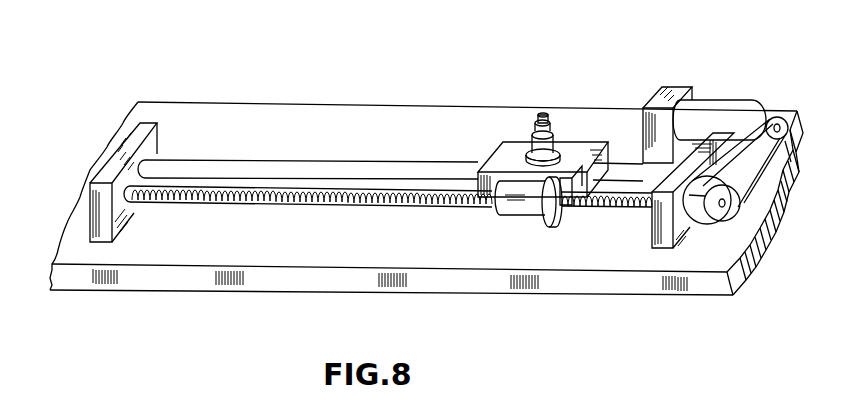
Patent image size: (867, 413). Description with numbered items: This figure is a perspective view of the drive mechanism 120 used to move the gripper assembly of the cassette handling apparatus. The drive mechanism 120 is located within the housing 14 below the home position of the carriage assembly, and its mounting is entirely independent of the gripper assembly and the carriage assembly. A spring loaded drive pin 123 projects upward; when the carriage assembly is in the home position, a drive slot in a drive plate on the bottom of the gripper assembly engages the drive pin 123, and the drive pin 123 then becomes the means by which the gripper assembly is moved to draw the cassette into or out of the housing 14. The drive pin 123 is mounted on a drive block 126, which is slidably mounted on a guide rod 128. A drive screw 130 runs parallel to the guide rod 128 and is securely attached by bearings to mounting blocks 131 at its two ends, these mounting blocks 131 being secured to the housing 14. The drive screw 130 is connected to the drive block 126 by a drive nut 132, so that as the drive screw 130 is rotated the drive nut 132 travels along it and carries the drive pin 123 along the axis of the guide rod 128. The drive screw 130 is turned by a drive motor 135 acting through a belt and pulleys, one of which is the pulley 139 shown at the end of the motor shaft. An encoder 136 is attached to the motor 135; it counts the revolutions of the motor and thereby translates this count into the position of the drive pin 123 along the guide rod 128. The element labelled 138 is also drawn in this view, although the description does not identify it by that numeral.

The housing 14 is at (650, 288).
The drive mechanism 120 is at (527, 70).
The drive pin 123 is at (551, 113).
The drive block 126 is at (500, 144).
The guide rod 128 is at (363, 168).
The drive screw 130 is at (372, 205).
The mounting blocks 131 is at (122, 212).
The drive nut 132 is at (540, 220).
The drive motor 135 is at (720, 110).
The encoder 136 is at (673, 87).
The pin body 138 is at (553, 140).
The pulley 139 is at (780, 119).